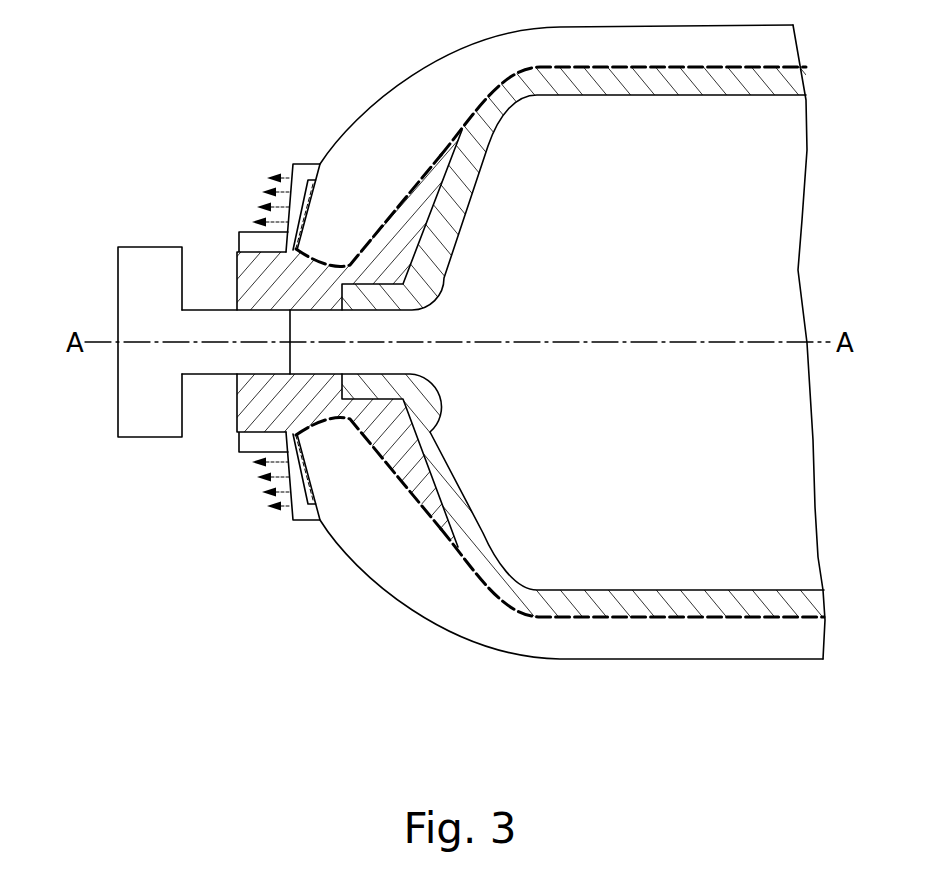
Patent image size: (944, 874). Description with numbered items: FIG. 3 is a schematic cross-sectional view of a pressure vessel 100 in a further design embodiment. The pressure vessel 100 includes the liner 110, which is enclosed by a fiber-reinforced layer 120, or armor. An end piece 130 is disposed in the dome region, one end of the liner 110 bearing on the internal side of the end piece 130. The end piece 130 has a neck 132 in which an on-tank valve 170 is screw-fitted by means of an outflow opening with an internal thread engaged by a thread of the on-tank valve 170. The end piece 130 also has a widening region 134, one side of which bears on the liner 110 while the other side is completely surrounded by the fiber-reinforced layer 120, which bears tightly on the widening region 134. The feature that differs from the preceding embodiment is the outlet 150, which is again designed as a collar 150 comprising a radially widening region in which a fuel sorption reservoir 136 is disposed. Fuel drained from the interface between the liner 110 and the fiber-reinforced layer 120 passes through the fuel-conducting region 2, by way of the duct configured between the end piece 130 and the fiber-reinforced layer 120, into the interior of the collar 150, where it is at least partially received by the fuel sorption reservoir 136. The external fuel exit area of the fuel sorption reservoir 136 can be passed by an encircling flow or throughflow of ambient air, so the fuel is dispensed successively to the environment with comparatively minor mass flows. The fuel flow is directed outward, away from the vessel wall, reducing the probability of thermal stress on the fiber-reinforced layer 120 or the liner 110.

The pressure vessel 100 is at (625, 198).
The liner 110 is at (753, 607).
The fiber-reinforced layer 120 is at (605, 627).
The end piece 130 is at (274, 296).
The neck 132 is at (246, 282).
The widening region 134 is at (405, 220).
The fuel sorption reservoir 136 is at (265, 166).
The outlet (collar) 150 is at (224, 468).
The on-tank valve 170 is at (140, 305).
The fuel-conducting region 2 is at (312, 192).